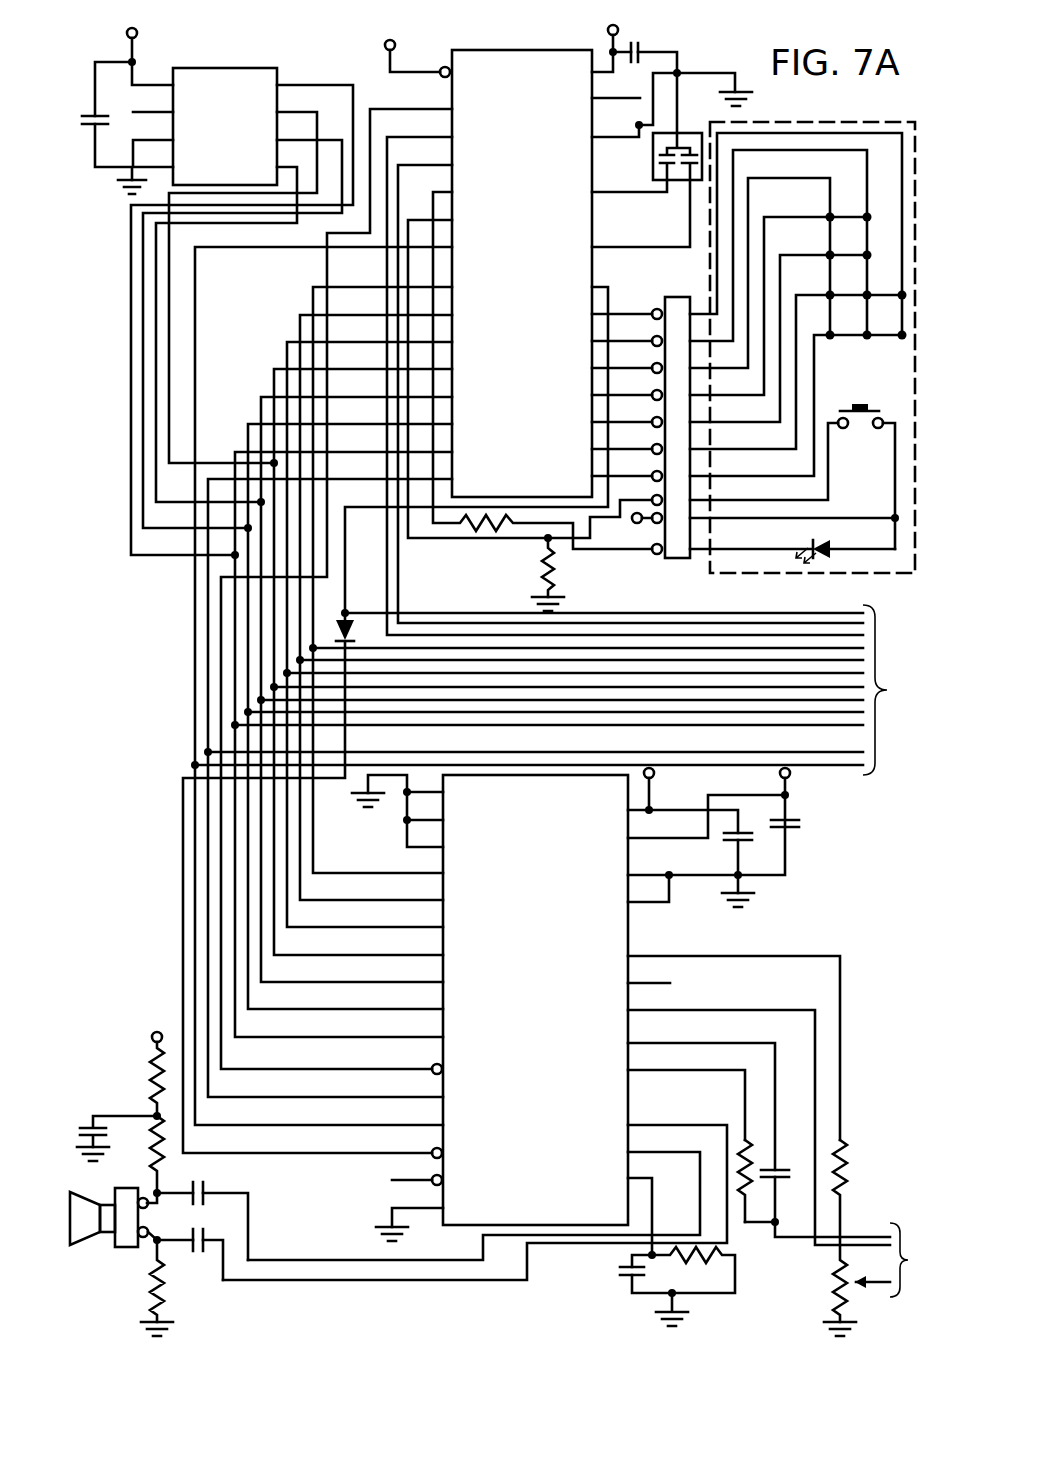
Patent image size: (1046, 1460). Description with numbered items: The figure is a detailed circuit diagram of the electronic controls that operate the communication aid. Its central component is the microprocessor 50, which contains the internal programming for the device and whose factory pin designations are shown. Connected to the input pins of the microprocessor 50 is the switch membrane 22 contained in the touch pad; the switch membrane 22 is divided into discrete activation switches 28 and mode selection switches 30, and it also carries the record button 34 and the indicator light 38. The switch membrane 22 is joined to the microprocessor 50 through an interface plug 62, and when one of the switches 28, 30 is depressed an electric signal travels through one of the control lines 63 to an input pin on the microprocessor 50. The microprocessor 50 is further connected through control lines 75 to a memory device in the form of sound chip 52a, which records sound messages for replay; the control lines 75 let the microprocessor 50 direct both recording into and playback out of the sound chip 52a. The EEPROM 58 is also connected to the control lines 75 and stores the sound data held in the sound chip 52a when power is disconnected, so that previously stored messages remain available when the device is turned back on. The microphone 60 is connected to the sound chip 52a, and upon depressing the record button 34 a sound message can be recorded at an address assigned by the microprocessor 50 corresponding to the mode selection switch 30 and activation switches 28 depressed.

The EEPROM 58 is at (222, 68).
The microprocessor 50 is at (533, 62).
The control lines 63 is at (623, 311).
The interface plug 62 is at (677, 558).
The switch membrane 22 is at (912, 545).
The mode selection switches 30 is at (867, 217).
The activation switches 28 is at (902, 294).
The record button 34 is at (863, 432).
The indicator light 38 is at (822, 563).
The control lines 75 is at (230, 663).
The microphone 60 is at (88, 1226).
The sound chip 52a is at (557, 1220).